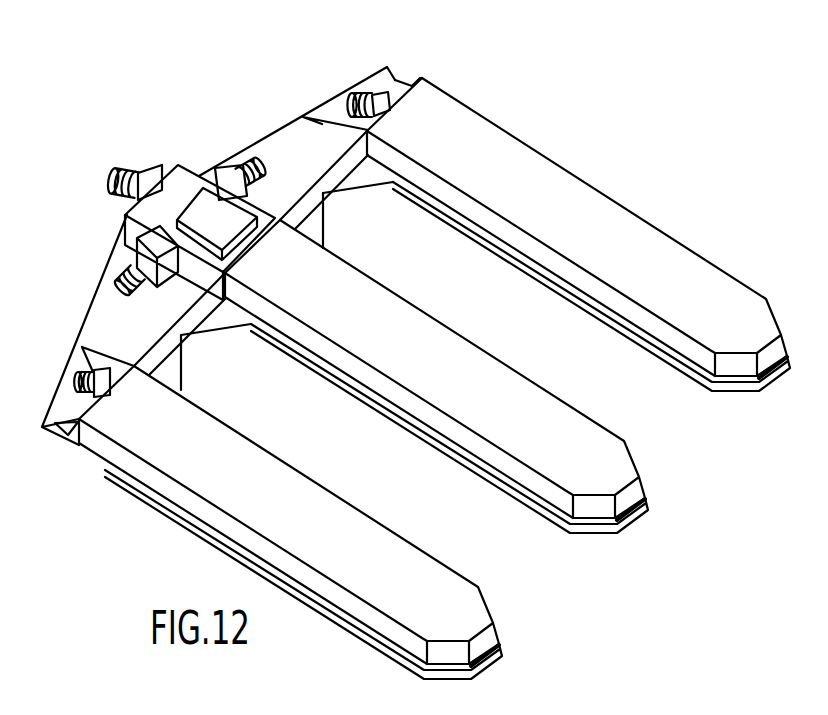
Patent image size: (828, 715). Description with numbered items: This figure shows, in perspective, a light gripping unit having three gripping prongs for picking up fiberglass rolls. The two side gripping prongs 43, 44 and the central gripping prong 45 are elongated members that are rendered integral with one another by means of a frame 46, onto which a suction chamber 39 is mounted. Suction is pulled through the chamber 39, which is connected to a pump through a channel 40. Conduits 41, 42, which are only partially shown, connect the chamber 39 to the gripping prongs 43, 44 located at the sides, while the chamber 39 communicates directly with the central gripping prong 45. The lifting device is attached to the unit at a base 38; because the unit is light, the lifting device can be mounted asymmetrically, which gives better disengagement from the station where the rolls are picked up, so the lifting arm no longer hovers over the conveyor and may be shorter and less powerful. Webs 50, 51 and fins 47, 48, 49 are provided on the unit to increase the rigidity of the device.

The base 38 is at (217, 224).
The chamber 39 is at (167, 215).
The channel 40 is at (140, 170).
The conduit 41 is at (98, 375).
The conduit 42 is at (370, 97).
The gripping prong 43 is at (285, 520).
The gripping prong 44 is at (592, 233).
The central gripping prong 45 is at (398, 374).
The frame 46 is at (160, 338).
The fin 47 is at (404, 78).
The fin 48 is at (325, 120).
The fin 49 is at (183, 334).
The web 50 is at (317, 228).
The web 51 is at (362, 177).